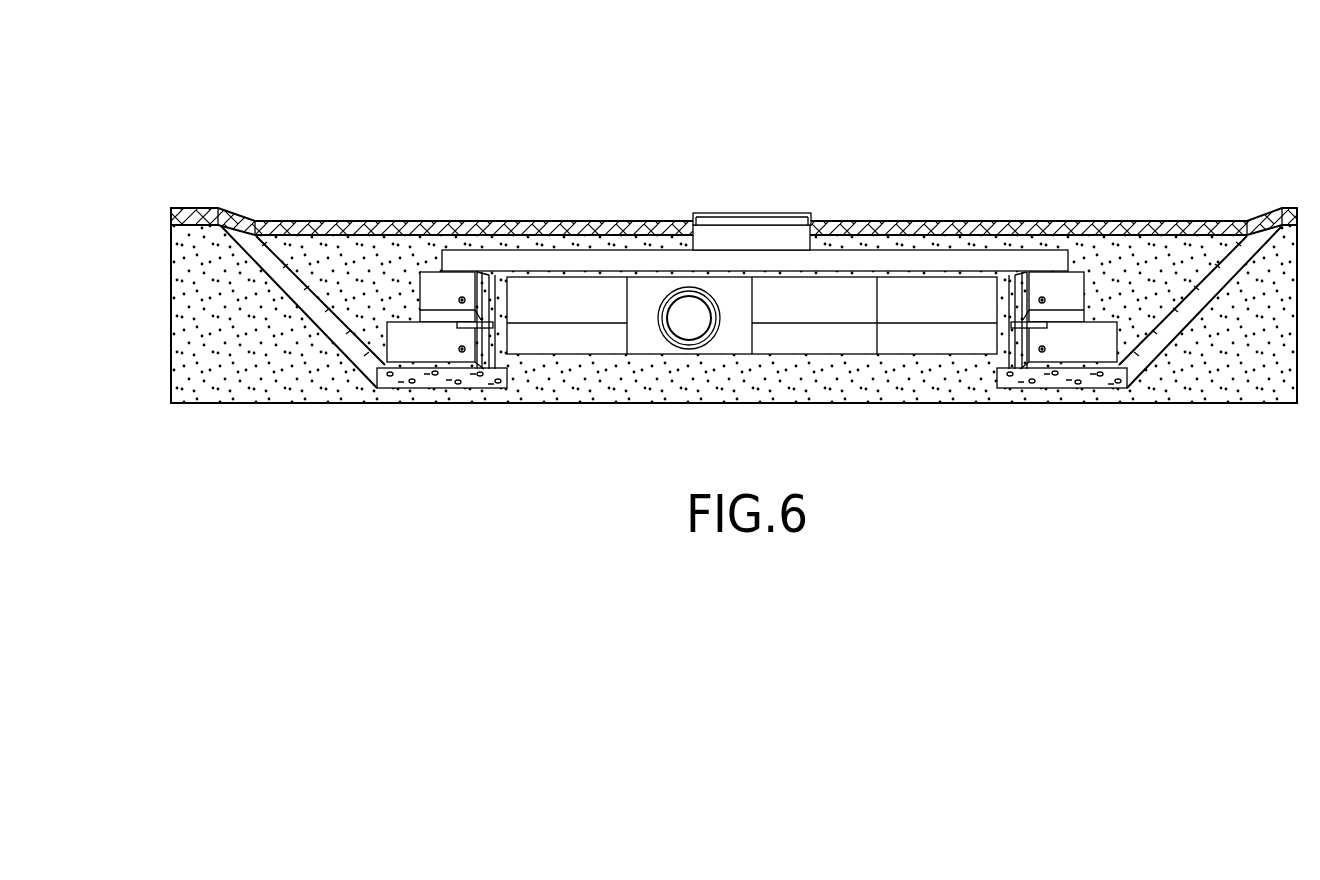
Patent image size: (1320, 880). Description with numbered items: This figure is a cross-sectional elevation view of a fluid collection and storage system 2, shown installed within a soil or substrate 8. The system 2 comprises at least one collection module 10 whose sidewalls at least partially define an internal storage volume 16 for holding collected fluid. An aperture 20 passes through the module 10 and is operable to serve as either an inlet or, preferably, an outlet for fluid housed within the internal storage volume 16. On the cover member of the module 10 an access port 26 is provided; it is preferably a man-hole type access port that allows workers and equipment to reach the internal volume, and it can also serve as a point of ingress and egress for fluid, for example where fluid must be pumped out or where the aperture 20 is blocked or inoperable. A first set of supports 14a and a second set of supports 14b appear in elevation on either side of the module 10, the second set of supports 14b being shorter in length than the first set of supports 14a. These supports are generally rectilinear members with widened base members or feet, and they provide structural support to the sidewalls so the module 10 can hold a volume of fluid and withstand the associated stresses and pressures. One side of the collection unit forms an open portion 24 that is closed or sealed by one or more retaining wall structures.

The fluid collection and storage system 2 is at (842, 132).
The soil or substrate 8 is at (1150, 258).
The collection module 10 is at (935, 247).
The first set of supports 14a is at (435, 353).
The second set of supports 14b is at (1047, 283).
The internal storage volume 16 is at (823, 338).
The aperture 20 is at (688, 318).
The open portion 24 is at (293, 387).
The access port 26 is at (774, 214).